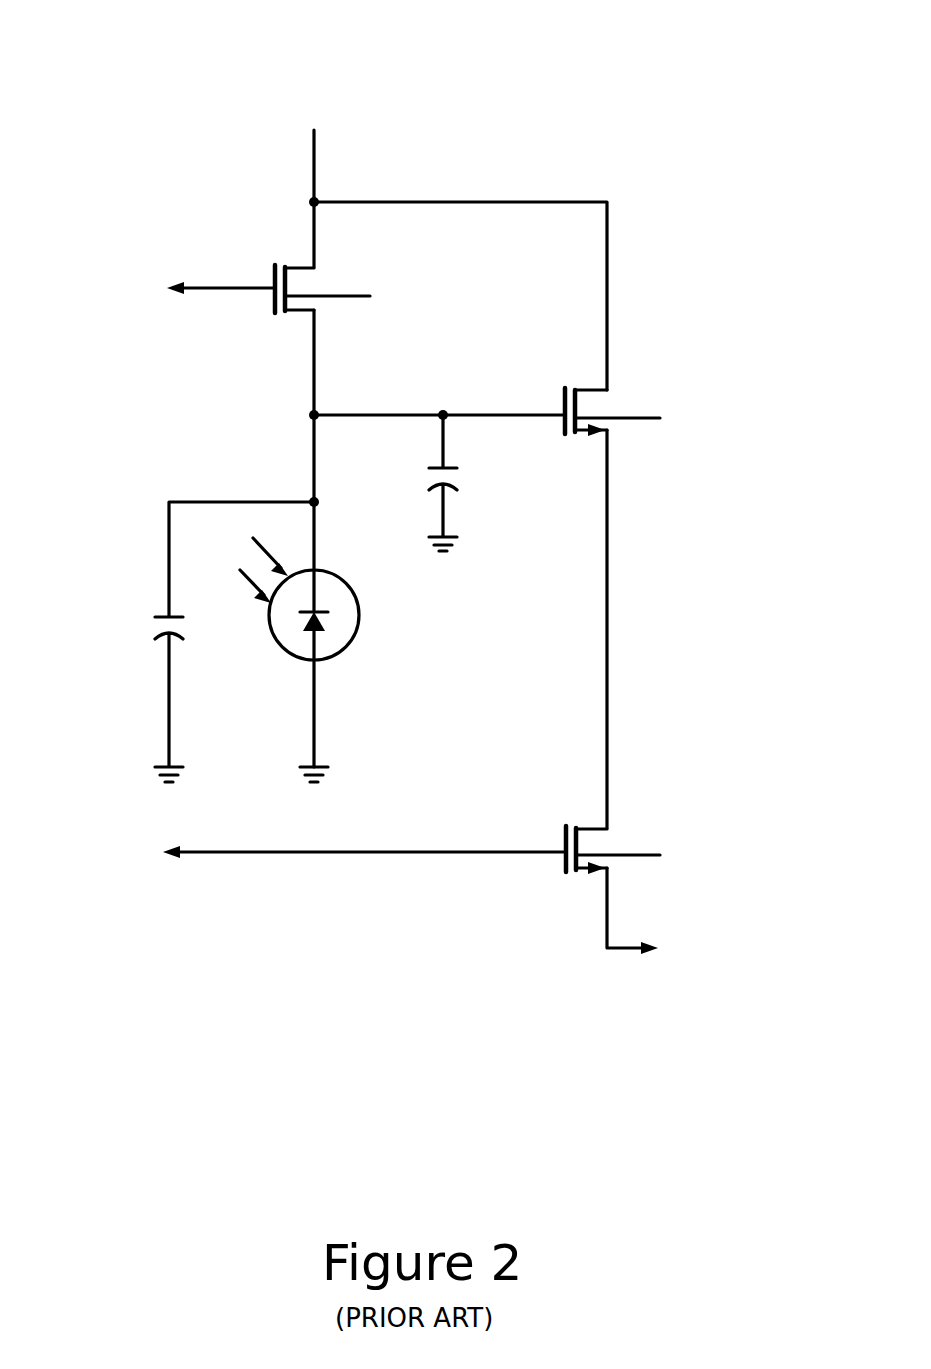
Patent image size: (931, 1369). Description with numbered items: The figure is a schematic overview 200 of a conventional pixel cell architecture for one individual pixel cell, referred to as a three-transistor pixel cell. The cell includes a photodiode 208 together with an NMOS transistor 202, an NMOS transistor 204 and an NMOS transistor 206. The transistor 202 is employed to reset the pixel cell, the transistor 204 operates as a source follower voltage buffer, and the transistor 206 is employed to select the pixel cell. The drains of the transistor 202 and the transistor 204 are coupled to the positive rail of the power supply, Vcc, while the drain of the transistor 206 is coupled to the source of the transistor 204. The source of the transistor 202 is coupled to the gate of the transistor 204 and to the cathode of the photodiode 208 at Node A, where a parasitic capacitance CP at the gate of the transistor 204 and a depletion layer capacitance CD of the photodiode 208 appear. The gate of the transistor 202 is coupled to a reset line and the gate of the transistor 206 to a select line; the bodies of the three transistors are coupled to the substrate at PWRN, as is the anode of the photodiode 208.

The schematic overview 200 is at (136, 41).
The NMOS transistor 202 is at (272, 283).
The NMOS transistor 204 is at (562, 396).
The NMOS transistor 206 is at (562, 834).
The photodiode 208 is at (337, 578).